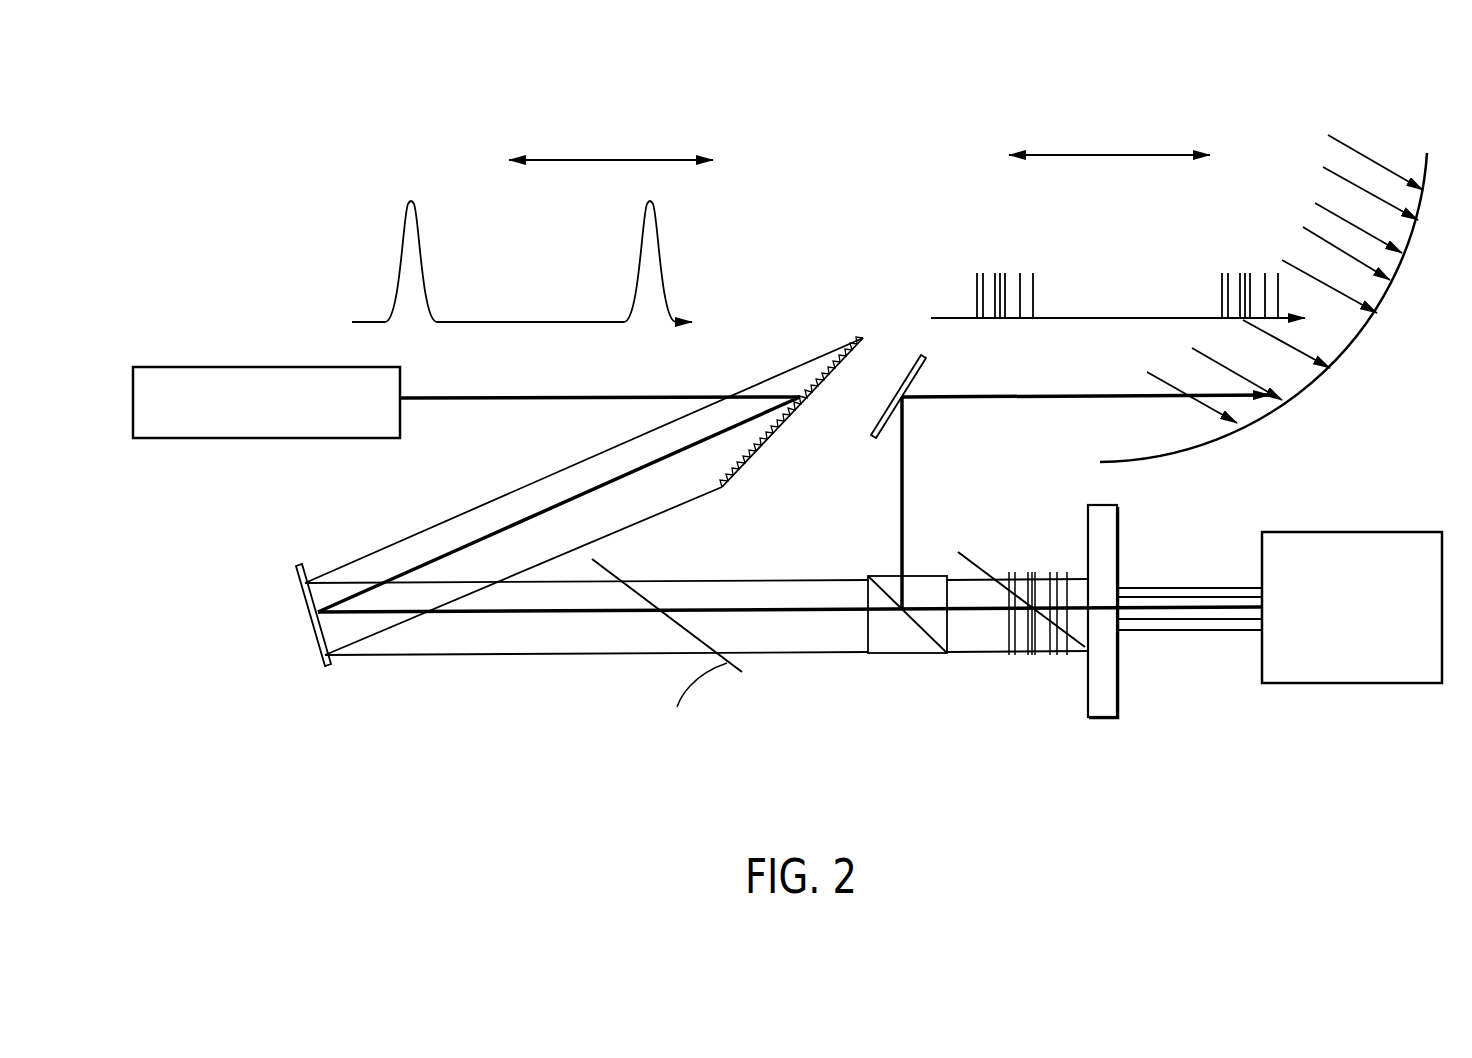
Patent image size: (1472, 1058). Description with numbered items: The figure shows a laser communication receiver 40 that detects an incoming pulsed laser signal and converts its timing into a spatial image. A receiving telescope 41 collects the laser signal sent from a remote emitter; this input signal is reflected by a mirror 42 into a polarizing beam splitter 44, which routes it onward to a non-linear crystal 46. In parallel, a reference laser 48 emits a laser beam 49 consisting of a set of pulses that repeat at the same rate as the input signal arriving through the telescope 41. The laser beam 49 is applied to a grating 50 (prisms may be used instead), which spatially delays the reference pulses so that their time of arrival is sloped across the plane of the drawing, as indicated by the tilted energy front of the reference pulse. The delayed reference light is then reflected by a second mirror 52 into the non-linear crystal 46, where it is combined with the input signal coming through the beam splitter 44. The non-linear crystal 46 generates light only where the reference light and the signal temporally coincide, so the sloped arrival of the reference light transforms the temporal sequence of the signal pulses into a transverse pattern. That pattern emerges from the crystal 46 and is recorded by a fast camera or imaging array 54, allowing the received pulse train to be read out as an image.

The laser communication receiver 40 is at (322, 205).
The receiving telescope 41 is at (1392, 300).
The mirror 42 is at (928, 363).
The polarizing beam splitter 44 is at (930, 575).
The non-linear crystal 46 is at (1118, 532).
The laser 48 is at (229, 366).
The laser beam 49 is at (497, 398).
The grating 50 is at (768, 446).
The mirror 52 is at (316, 644).
The fast camera 54 is at (1360, 686).